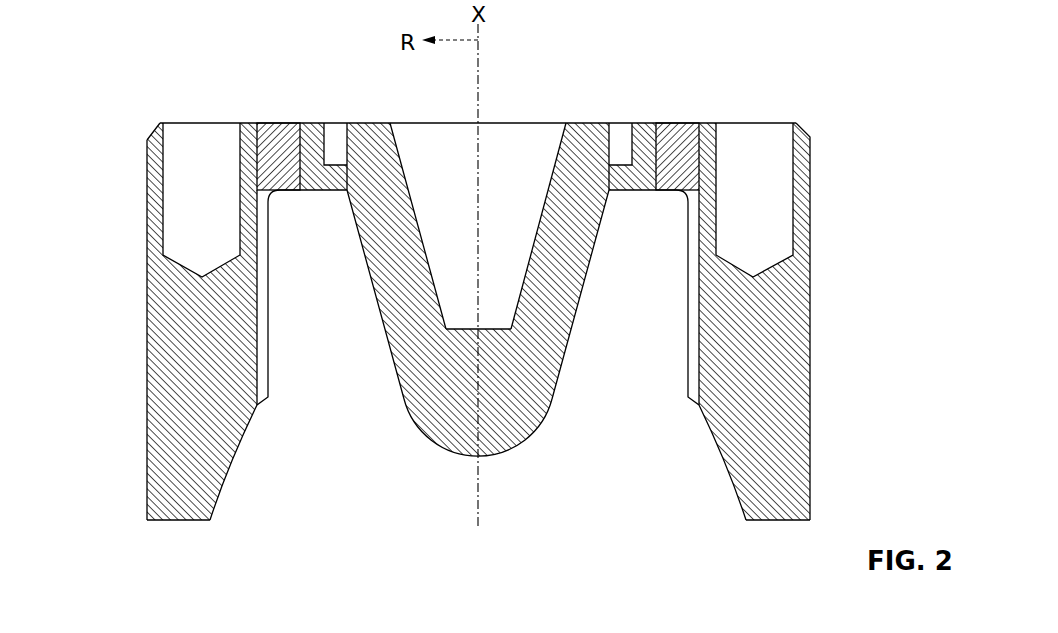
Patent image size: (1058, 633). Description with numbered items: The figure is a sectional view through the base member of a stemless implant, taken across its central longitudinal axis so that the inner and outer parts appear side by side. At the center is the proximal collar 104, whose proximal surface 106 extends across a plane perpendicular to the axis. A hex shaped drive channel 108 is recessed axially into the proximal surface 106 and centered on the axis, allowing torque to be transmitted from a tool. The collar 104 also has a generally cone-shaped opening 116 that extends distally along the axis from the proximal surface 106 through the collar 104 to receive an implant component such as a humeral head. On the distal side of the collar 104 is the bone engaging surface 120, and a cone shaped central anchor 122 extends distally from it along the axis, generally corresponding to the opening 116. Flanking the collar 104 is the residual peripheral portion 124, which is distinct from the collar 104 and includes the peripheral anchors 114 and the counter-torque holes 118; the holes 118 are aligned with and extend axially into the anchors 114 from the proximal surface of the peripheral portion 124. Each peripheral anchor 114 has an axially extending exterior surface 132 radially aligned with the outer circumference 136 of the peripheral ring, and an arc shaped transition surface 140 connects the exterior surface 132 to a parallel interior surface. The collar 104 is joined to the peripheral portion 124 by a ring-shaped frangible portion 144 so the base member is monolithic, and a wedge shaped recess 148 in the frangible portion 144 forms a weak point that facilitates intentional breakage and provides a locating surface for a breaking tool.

The proximal collar 104 is at (332, 122).
The proximal surface 106 is at (362, 122).
The drive channel 108 is at (618, 122).
The peripheral anchor 114 is at (810, 510).
The opening 116 is at (547, 122).
The counter-torque hole 118 is at (193, 122).
The bone engaging surface 120 is at (318, 193).
The central anchor 122 is at (507, 450).
The residual peripheral portion 124 is at (153, 128).
The exterior surface 132 is at (810, 356).
The outer circumference 136 is at (810, 149).
The transition surface 140 is at (235, 447).
The frangible portion 144 is at (268, 122).
The recess 148 is at (658, 122).